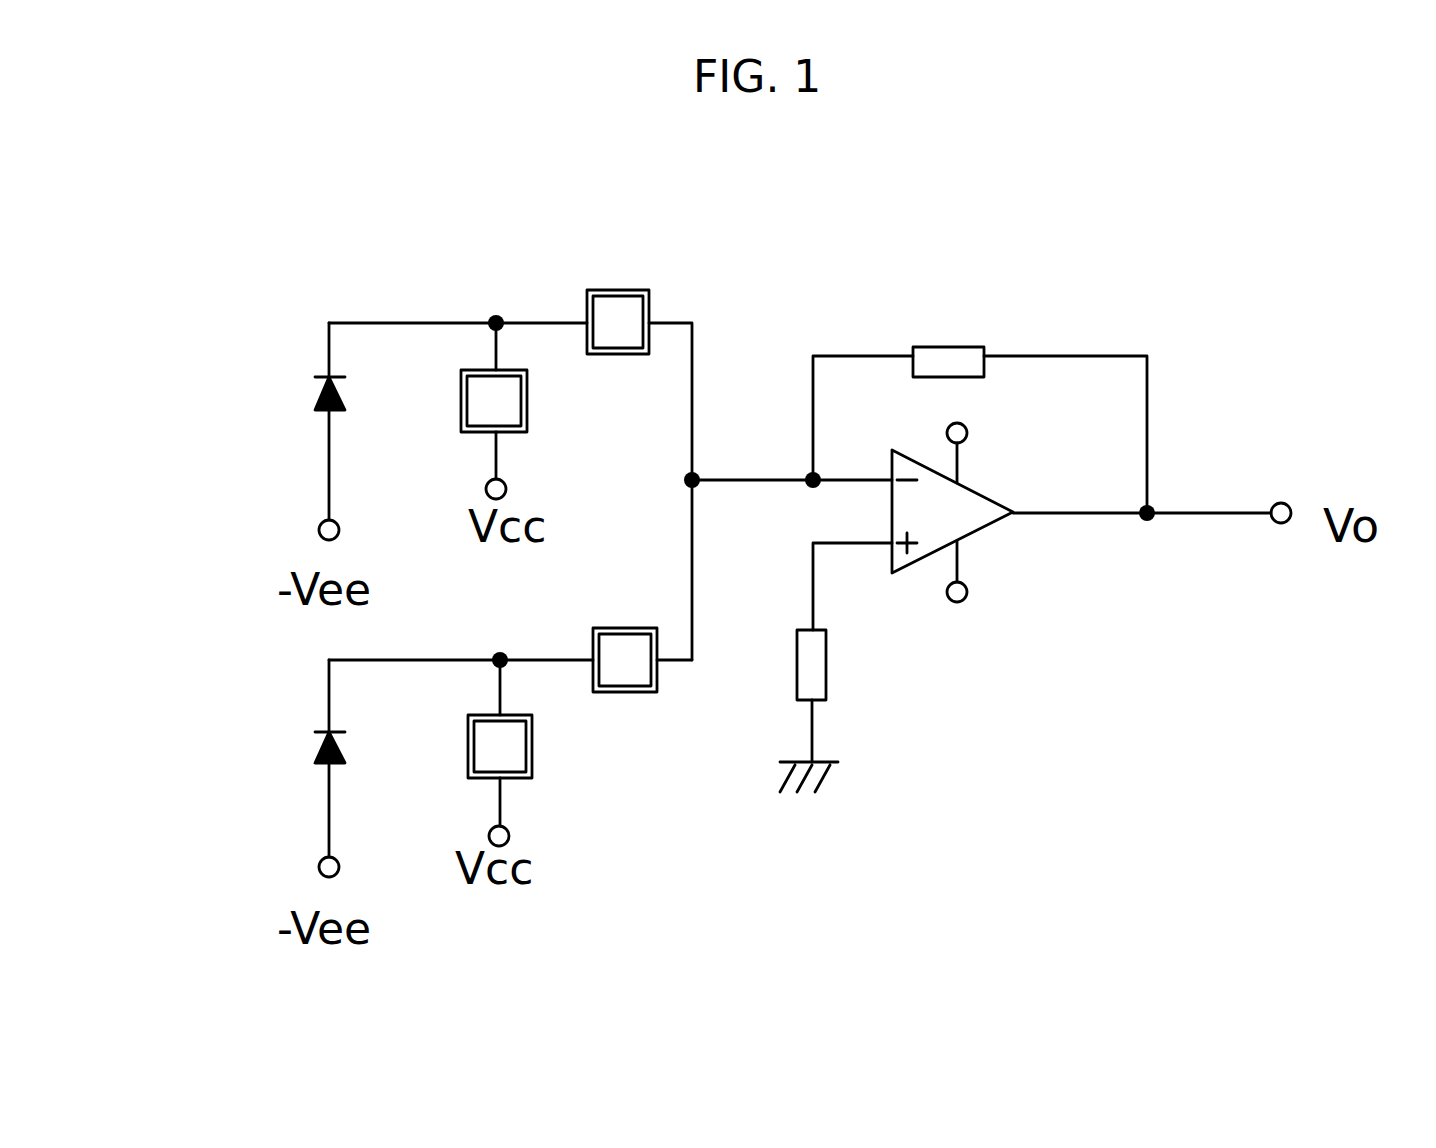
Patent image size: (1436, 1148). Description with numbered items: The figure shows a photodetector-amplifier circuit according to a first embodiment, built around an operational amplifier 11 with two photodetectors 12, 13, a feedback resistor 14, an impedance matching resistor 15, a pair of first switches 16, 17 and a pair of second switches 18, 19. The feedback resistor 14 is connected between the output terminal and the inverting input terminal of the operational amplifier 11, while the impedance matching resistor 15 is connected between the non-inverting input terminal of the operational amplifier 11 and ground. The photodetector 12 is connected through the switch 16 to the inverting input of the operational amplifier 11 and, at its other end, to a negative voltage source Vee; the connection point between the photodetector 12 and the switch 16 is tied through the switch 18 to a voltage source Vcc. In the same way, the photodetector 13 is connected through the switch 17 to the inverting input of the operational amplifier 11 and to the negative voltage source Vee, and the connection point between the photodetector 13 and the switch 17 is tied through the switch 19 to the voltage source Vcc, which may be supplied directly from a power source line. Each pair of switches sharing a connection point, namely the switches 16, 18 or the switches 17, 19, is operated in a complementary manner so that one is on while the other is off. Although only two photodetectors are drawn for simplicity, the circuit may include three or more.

The operational amplifier 11 is at (990, 523).
The photodetector 12 is at (318, 393).
The photodetector 13 is at (318, 750).
The feedback resistor 14 is at (922, 347).
The impedance matching resistor 15 is at (826, 657).
The switch 16 is at (613, 290).
The switch 17 is at (606, 628).
The switch 18 is at (461, 412).
The switch 19 is at (532, 768).